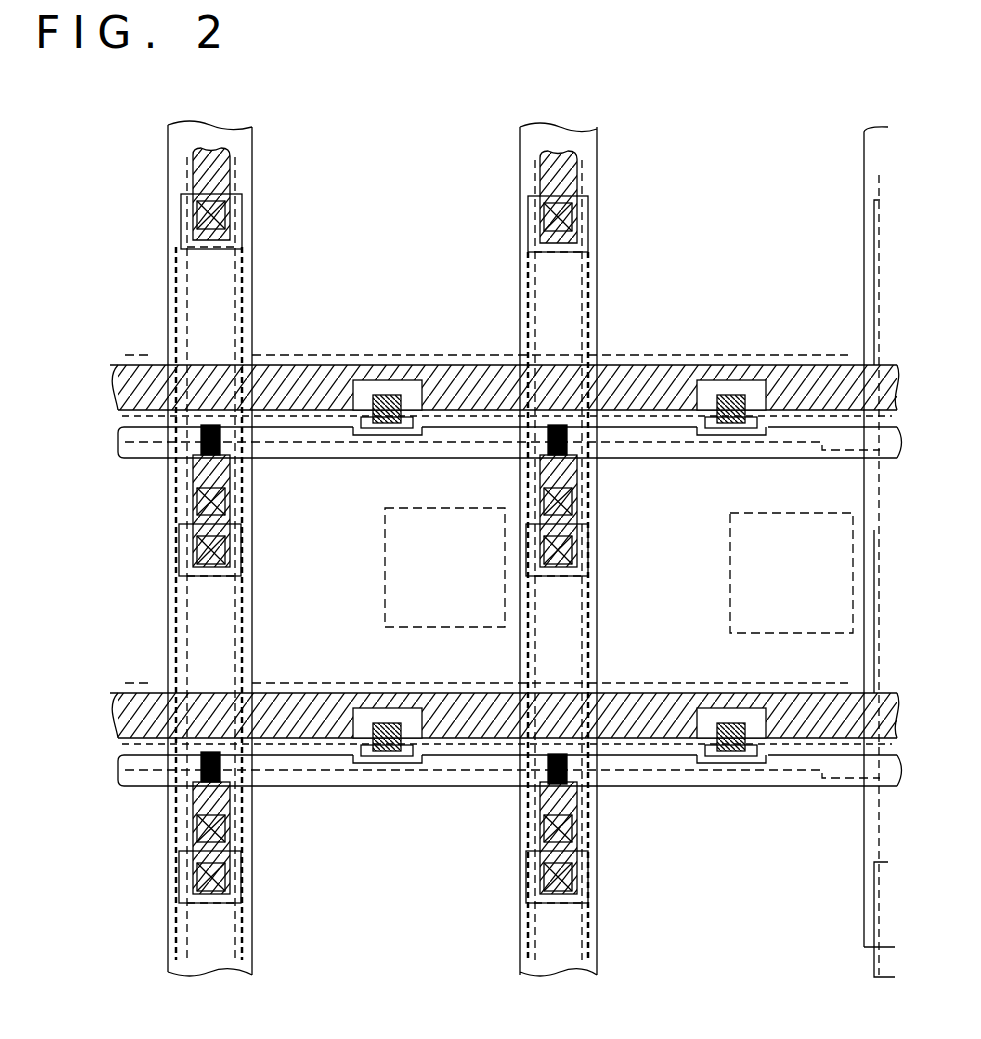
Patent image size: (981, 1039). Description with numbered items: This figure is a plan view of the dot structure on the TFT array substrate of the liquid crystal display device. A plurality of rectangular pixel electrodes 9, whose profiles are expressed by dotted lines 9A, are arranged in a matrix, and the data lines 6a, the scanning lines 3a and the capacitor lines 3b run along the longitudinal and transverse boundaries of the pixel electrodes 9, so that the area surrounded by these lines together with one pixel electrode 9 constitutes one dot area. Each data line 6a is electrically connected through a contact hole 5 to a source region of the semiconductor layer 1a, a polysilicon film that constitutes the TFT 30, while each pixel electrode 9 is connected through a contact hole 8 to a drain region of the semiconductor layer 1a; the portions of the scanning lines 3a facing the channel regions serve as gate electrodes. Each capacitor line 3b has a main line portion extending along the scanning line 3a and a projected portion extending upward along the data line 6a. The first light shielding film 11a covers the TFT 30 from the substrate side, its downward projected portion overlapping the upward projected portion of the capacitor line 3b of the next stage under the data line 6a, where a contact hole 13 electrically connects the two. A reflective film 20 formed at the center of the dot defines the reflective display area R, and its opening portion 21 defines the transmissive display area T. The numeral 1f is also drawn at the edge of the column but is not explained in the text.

The semiconductor layer 1a is at (568, 772).
The source line edge 1f is at (165, 622).
The scanning line 3a is at (402, 786).
The capacitor line 3b is at (368, 692).
The contact hole 5 is at (577, 832).
The data line 6a is at (597, 497).
The contact hole 8 is at (731, 756).
The pixel electrode 9 is at (499, 501).
The dotted line 9A is at (833, 462).
The first light shielding film 11a is at (588, 468).
The contact hole 13 is at (183, 542).
The reflective film 20 is at (282, 478).
The opening portion 21 is at (447, 506).
The TFT 30 is at (262, 843).
The reflective display area R is at (292, 565).
The transmissive display area T is at (451, 577).